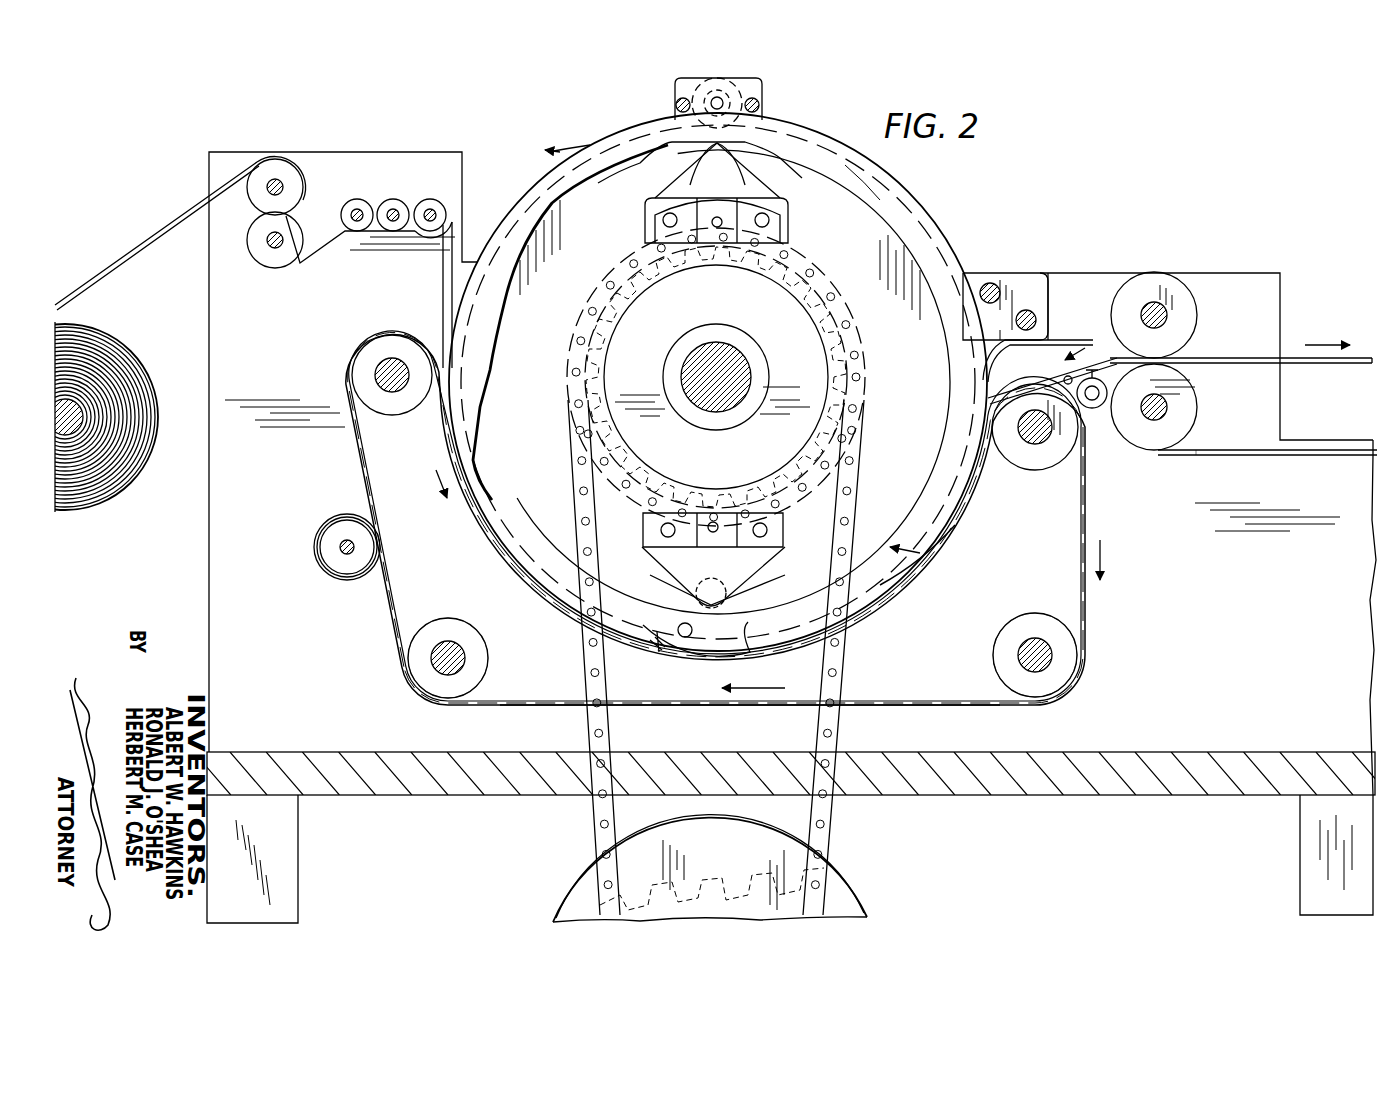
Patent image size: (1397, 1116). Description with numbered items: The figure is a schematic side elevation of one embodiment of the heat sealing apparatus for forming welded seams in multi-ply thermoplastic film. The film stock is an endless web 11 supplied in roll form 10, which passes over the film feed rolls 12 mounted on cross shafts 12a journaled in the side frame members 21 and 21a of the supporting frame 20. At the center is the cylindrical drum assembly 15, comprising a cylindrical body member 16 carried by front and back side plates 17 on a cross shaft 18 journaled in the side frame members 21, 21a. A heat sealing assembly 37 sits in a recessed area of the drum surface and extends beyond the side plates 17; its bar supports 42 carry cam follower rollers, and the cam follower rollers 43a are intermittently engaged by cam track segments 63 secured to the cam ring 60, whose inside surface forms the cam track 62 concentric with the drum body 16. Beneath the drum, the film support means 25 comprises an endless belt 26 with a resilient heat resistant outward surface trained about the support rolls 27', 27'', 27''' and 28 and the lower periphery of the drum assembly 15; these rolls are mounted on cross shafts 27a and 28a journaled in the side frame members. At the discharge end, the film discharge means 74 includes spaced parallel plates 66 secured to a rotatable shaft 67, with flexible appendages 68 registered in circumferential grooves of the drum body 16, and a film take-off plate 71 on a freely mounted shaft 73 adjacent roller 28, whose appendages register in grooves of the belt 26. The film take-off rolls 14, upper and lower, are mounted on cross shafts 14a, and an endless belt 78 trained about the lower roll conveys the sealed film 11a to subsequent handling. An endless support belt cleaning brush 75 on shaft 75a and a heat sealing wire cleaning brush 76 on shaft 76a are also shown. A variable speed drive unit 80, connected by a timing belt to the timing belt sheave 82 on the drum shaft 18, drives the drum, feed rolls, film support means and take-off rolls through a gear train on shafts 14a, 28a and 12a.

The roll 10 is at (100, 350).
The endless web 11 is at (150, 255).
The sealed film 11a is at (1295, 356).
The film feed rolls 12 is at (322, 185).
The cross shafts 12a is at (428, 228).
The film take-off rolls 14 is at (1172, 272).
The cross shafts 14a is at (1165, 318).
The cylindrical drum assembly 15 is at (842, 133).
The cylindrical body member 16 is at (905, 197).
The side plates 17 is at (902, 262).
The cross shaft 18 is at (704, 405).
The supporting frame 20 is at (1272, 772).
The side frame member 21 is at (205, 364).
The side frame member 21a is at (1093, 285).
The film support means 25 is at (385, 650).
The endless belt 26 is at (555, 708).
The support roll 27' is at (362, 398).
The support roll 27'' is at (433, 675).
The support roll 27''' is at (1035, 675).
The cross shafts 27a is at (392, 390).
The support roll 28 is at (1060, 452).
The cross shaft 28a is at (1028, 440).
The heat sealing assembly 37 is at (768, 100).
The bar supports 42 is at (658, 230).
The cam follower rollers 43a is at (666, 180).
The cam ring 60 is at (858, 172).
The cam track 62 is at (486, 368).
The cam track segments 63 is at (905, 552).
The parallel plates 66 is at (1010, 272).
The shaft 67 is at (1038, 316).
The flexible appendages 68 is at (1038, 361).
The film take-off plate 71 is at (1180, 380).
The shaft 73 is at (1100, 410).
The film discharge means 74 is at (1100, 325).
The endless support belt cleaning brush 75 is at (316, 548).
The shaft 75a is at (344, 556).
The heat sealing wire cleaning brush 76 is at (715, 96).
The shaft 76a is at (722, 100).
The endless belt 78 is at (1325, 395).
The variable speed drive unit 80 is at (850, 900).
The timing belt sheave 82 is at (845, 424).